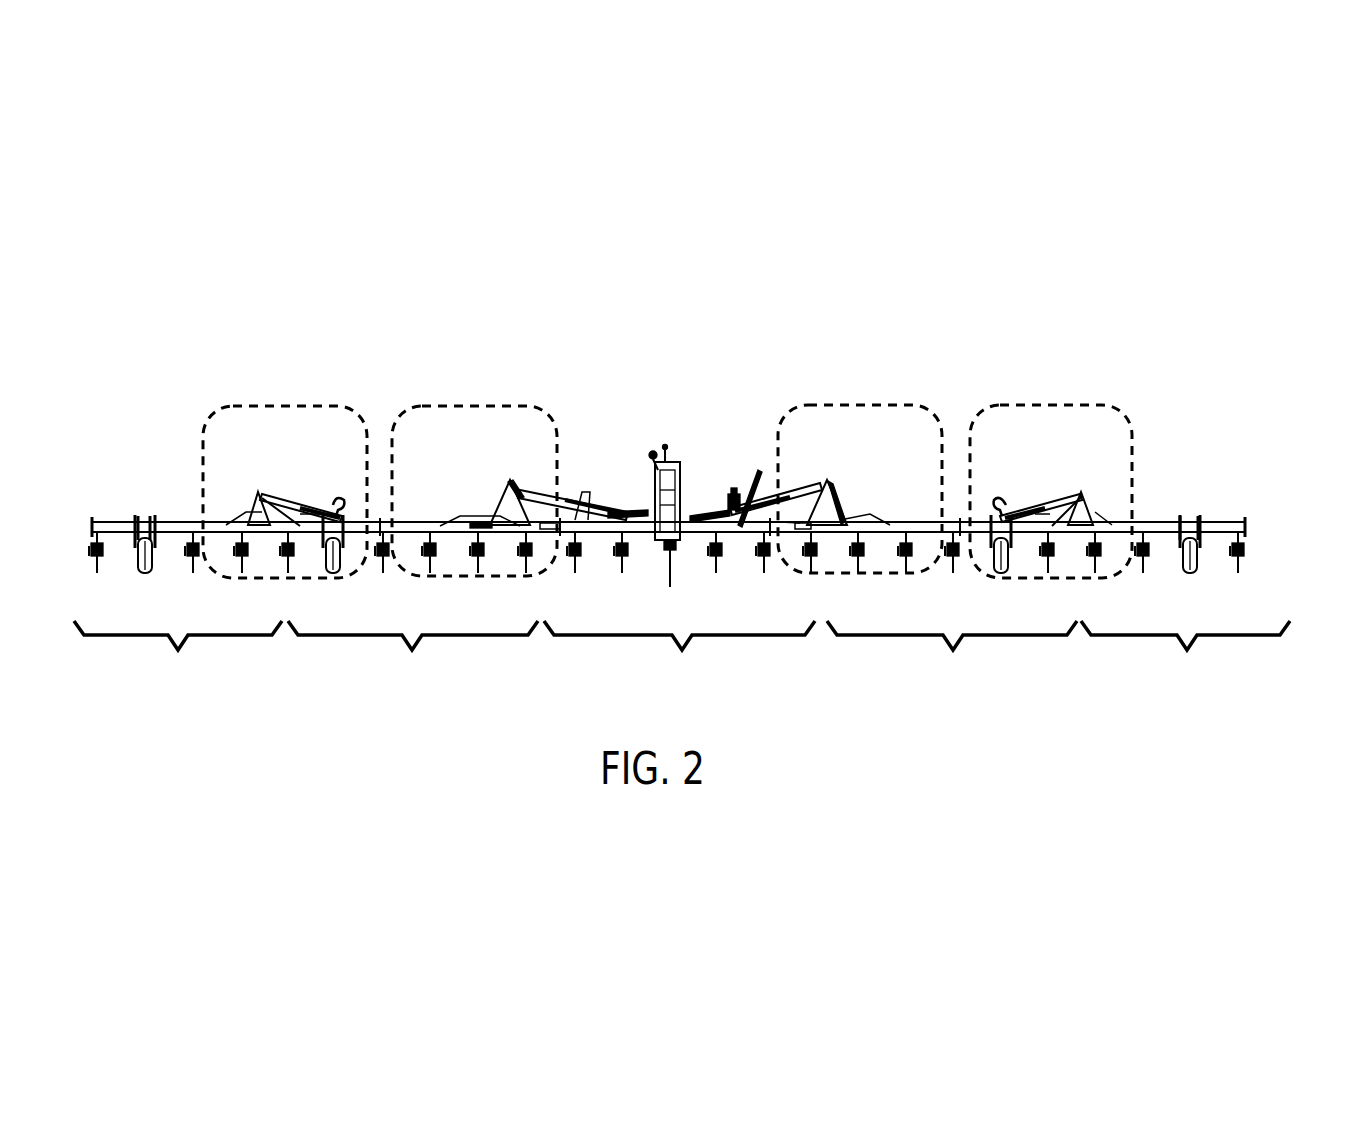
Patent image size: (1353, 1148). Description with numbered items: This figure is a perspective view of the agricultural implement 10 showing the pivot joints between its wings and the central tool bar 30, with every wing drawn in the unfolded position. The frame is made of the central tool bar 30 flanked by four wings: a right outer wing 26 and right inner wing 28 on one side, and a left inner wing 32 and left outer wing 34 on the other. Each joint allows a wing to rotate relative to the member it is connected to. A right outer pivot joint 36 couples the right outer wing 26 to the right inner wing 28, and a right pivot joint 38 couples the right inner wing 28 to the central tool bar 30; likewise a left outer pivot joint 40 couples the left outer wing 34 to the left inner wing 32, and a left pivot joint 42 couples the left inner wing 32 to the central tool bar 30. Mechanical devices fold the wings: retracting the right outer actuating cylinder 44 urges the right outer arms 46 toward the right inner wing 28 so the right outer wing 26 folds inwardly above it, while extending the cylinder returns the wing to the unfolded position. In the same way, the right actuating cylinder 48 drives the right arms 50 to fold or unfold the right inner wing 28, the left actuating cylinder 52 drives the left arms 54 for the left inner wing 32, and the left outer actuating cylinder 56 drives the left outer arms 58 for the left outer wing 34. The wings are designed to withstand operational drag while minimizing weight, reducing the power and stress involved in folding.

The agricultural implement 10 is at (846, 320).
The right outer wing 26 is at (208, 596).
The right inner wing 28 is at (413, 605).
The central tool bar 30 is at (679, 605).
The left inner wing 32 is at (940, 596).
The left outer wing 34 is at (1165, 596).
The right outer pivot joint 36 is at (233, 406).
The right pivot joint 38 is at (428, 406).
The left outer pivot joint 40 is at (1095, 405).
The left pivot joint 42 is at (905, 405).
The right outer actuating cylinder 44 is at (318, 514).
The right outer arms 46 is at (250, 513).
The right actuating cylinder 48 is at (590, 514).
The right arms 50 is at (507, 495).
The left actuating cylinder 52 is at (780, 502).
The left arms 54 is at (837, 497).
The left outer actuating cylinder 56 is at (1027, 513).
The left outer arms 58 is at (1083, 510).